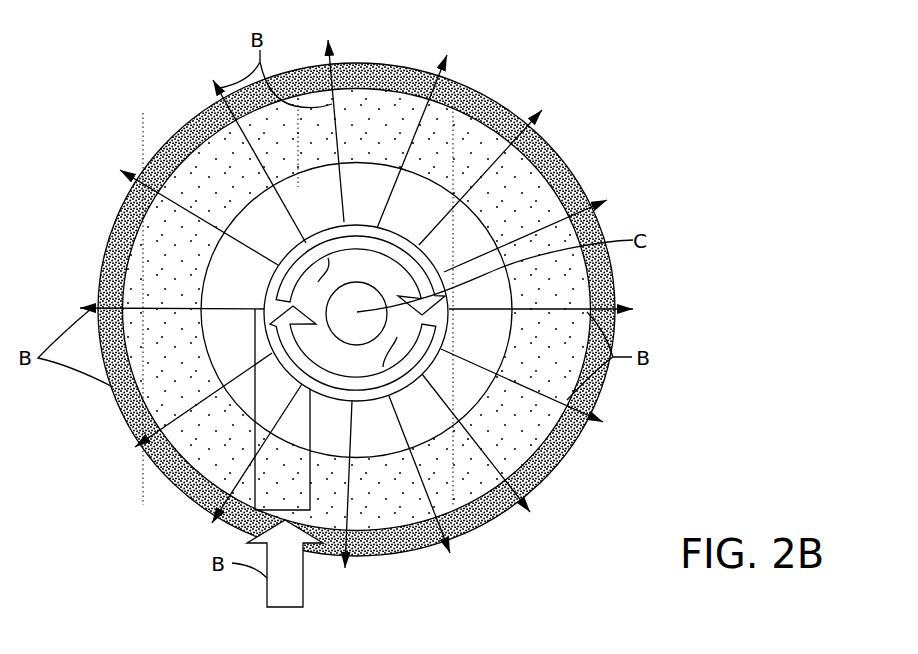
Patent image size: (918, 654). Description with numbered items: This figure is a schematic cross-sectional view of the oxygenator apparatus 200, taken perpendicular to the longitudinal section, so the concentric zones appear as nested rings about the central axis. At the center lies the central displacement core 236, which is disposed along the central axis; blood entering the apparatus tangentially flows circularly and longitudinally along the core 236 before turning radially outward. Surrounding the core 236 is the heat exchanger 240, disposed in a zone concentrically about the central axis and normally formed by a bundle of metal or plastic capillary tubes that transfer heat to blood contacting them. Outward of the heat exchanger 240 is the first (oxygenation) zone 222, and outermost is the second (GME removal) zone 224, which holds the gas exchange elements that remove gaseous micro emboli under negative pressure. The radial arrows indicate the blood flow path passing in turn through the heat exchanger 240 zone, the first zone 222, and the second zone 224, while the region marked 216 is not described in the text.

The oxygenator apparatus 200 is at (114, 78).
The inlet channel 216 is at (211, 508).
The first (oxygenation) zone 222 is at (466, 133).
The second (GME removal) zone 224 is at (549, 158).
The central displacement core 236 is at (308, 244).
The heat exchanger 240 is at (435, 427).